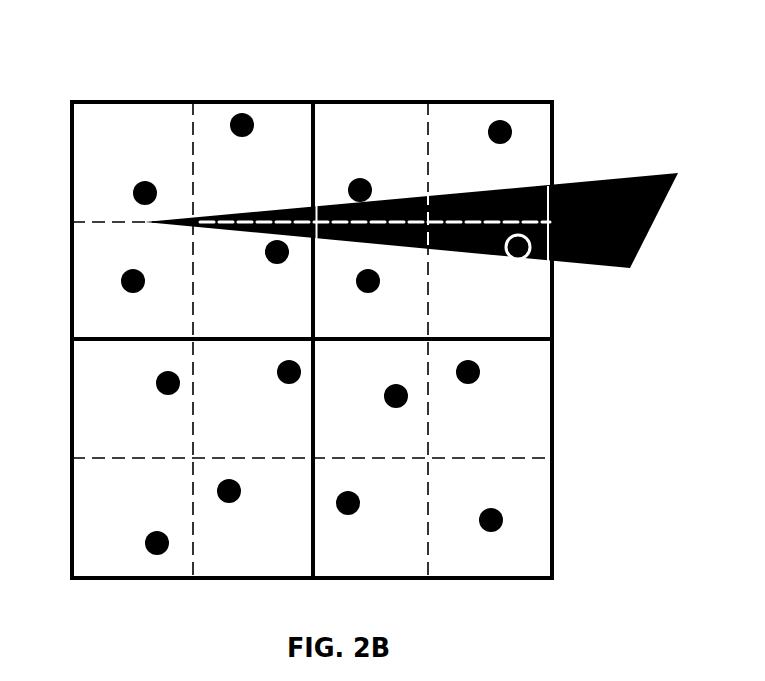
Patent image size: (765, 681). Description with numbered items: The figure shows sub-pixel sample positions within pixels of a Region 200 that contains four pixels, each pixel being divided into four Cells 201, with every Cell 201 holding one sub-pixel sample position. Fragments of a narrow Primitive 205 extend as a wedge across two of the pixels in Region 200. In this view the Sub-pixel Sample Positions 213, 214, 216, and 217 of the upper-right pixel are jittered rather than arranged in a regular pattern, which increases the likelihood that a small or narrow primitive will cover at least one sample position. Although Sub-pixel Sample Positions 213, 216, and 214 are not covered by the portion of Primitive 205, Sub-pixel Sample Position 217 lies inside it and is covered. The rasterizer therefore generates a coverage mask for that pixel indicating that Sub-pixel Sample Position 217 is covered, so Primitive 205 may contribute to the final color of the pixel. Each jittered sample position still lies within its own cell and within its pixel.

The region 200 is at (128, 101).
The cell 201 is at (128, 215).
The primitive 205 is at (625, 177).
The sub-pixel sample position 213 is at (361, 180).
The sub-pixel sample position 214 is at (508, 122).
The sub-pixel sample position 216 is at (380, 285).
The sub-pixel sample position 217 is at (527, 258).